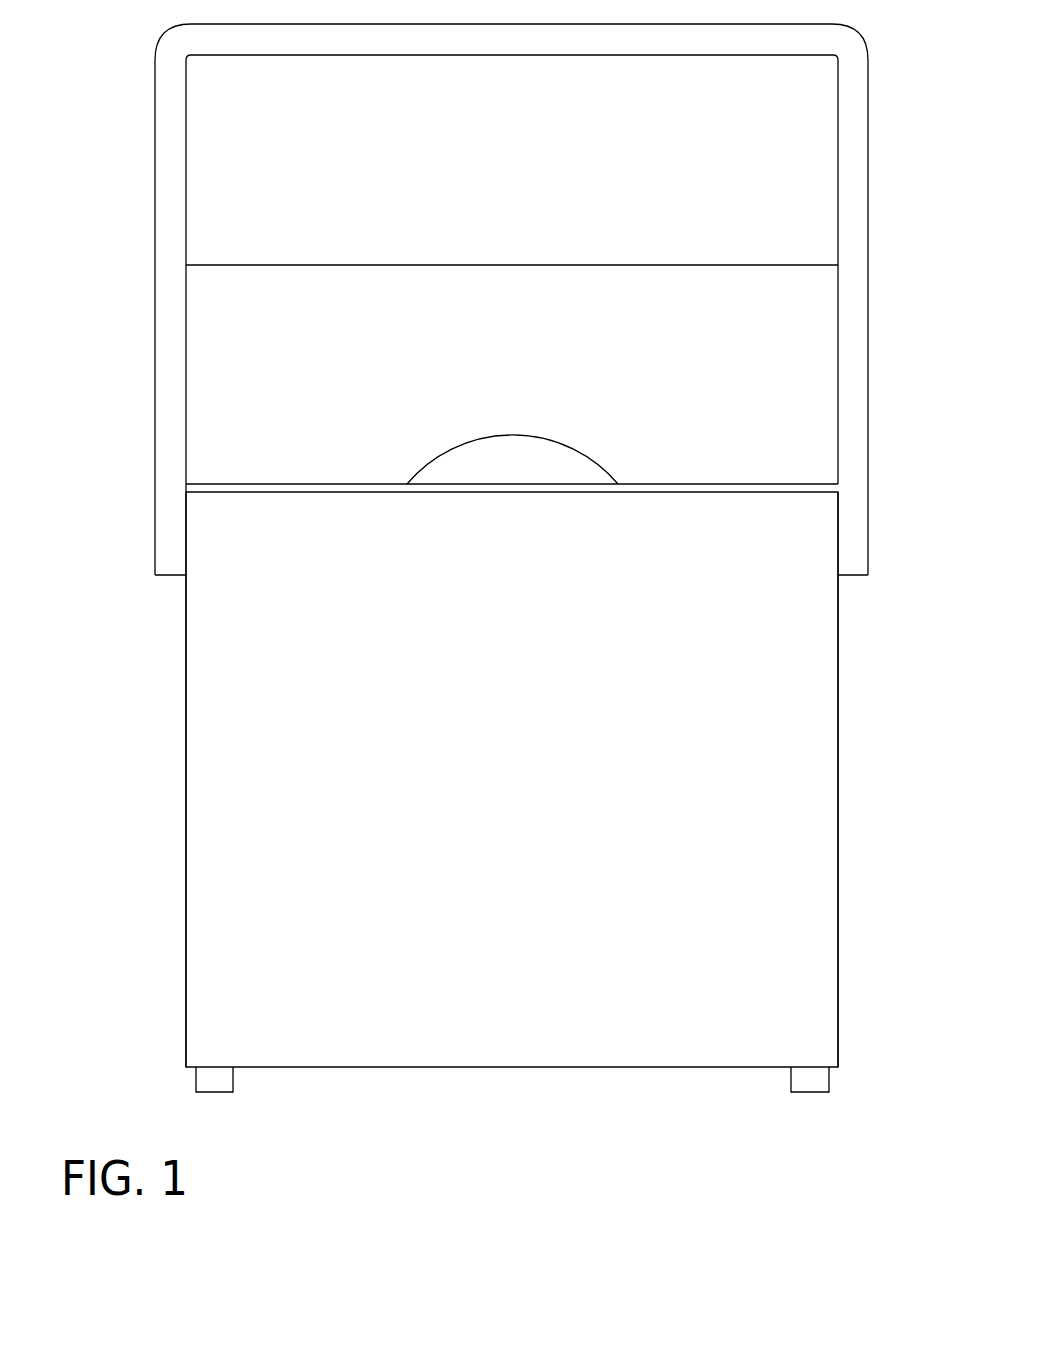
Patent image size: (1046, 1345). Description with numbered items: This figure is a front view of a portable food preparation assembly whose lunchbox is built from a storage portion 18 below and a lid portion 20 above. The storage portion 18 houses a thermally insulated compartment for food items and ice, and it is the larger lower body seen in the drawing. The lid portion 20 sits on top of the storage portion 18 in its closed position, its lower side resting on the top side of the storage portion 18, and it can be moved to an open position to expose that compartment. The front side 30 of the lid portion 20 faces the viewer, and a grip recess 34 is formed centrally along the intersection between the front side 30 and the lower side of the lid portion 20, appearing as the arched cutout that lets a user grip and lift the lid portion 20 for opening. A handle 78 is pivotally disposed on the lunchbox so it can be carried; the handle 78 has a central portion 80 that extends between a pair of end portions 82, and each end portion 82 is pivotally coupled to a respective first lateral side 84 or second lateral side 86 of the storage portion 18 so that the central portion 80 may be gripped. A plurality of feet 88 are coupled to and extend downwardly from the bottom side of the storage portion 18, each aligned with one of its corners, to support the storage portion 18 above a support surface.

The storage portion 18 is at (850, 918).
The lid portion 20 is at (176, 390).
The front side 30 is at (783, 400).
The grip recess 34 is at (553, 482).
The handle 78 is at (155, 52).
The central portion 80 is at (242, 55).
The end portions 82 is at (155, 282).
The first lateral side 84 is at (186, 640).
The second lateral side 86 is at (838, 803).
The feet 88 is at (213, 1092).